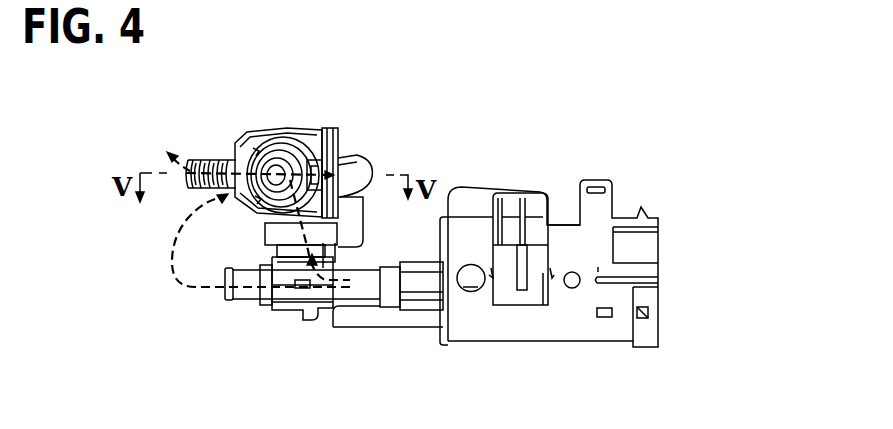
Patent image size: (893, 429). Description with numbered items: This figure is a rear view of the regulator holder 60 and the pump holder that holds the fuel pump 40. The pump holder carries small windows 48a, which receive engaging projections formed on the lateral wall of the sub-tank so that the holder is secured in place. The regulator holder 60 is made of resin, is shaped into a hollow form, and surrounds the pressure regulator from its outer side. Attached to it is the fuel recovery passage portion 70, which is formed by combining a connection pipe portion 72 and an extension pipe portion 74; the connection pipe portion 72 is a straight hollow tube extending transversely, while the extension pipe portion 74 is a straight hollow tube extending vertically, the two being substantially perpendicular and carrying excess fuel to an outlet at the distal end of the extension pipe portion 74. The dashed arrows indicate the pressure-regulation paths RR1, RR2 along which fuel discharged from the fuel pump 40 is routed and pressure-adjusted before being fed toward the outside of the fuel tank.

The fuel pump 40 is at (599, 180).
The small windows 48a is at (523, 292).
The regulator holder 60 is at (275, 128).
The fuel recovery passage portion 70 is at (412, 110).
The connection pipe portion 72 is at (345, 158).
The extension pipe portion 74 is at (368, 197).
The pressure-regulation path RR1 is at (192, 283).
The pressure-regulation path RR2 is at (340, 267).